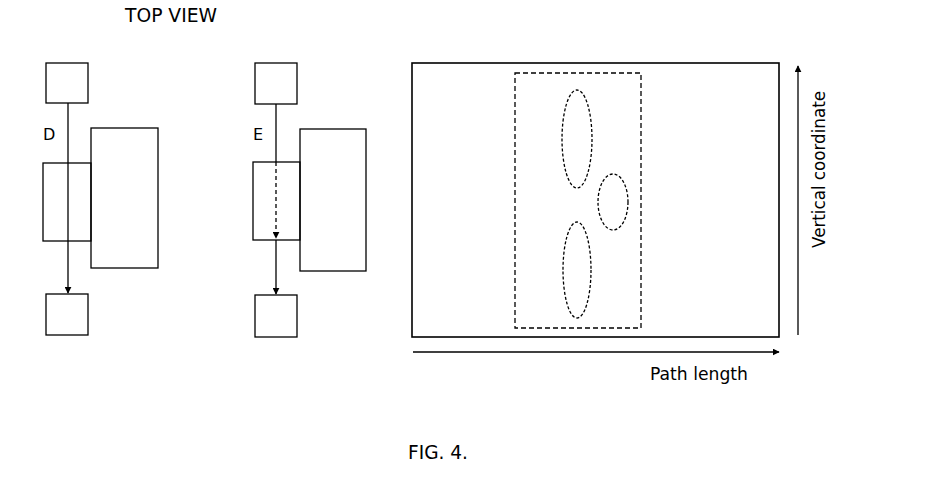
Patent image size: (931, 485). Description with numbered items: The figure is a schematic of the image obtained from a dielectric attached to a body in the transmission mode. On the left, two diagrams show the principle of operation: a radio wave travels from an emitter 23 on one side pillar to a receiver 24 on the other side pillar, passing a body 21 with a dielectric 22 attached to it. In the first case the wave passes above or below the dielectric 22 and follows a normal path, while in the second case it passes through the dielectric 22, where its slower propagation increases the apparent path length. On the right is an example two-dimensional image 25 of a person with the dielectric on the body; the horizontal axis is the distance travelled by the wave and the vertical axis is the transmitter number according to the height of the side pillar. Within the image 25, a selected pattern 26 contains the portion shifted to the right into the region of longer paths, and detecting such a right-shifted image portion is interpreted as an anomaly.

The body 21 is at (228, 199).
The dielectric 22 is at (171, 201).
The emitter 23 is at (171, 83).
The receiver 24 is at (171, 315).
The 2D image 25 is at (595, 200).
The selected pattern 26 is at (578, 200).